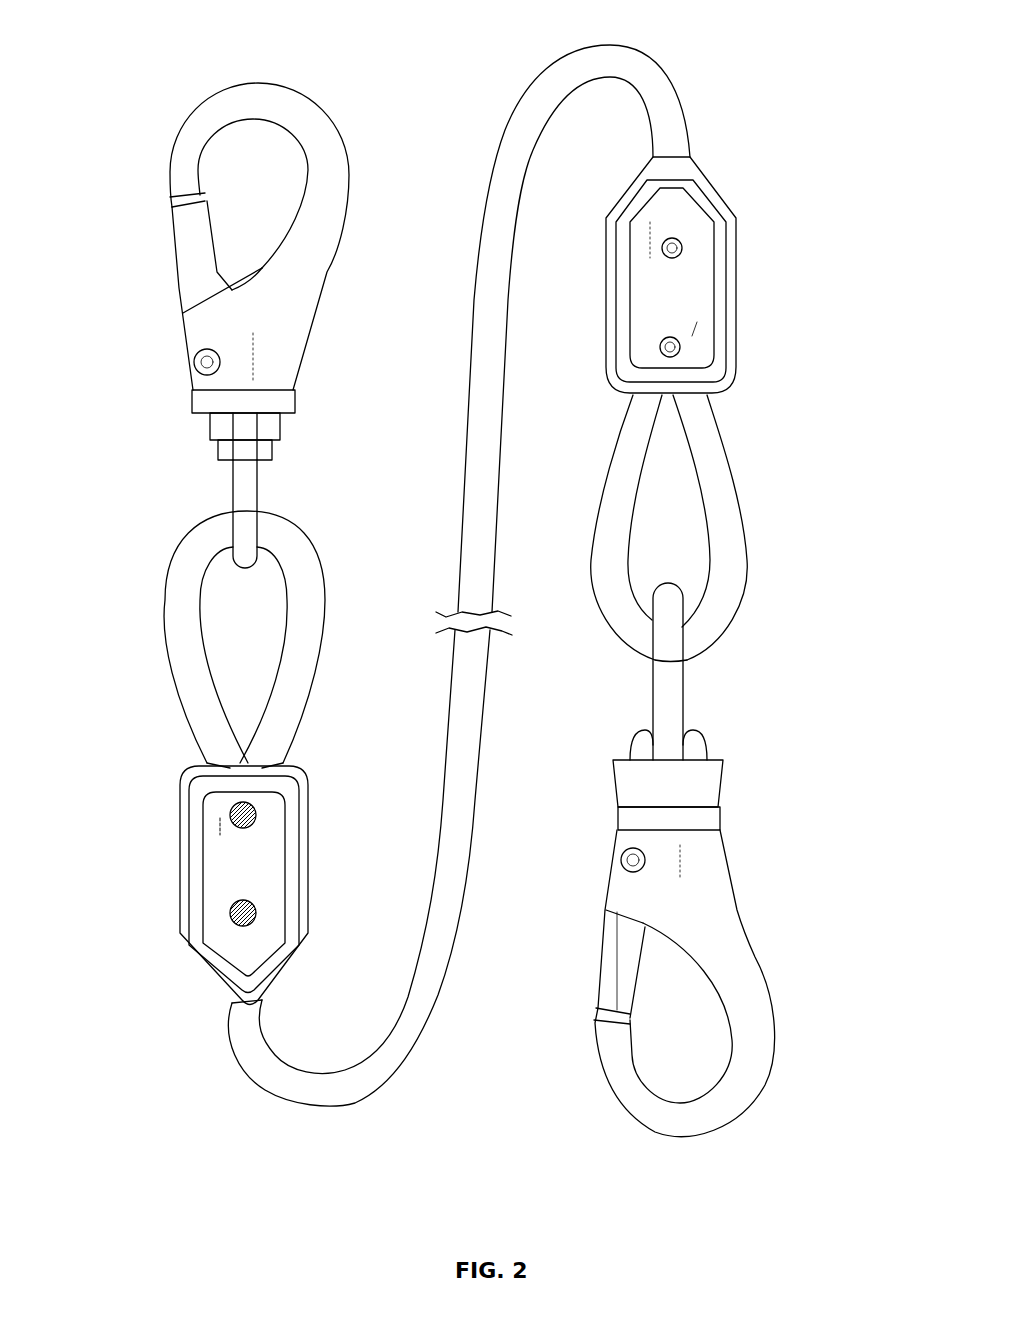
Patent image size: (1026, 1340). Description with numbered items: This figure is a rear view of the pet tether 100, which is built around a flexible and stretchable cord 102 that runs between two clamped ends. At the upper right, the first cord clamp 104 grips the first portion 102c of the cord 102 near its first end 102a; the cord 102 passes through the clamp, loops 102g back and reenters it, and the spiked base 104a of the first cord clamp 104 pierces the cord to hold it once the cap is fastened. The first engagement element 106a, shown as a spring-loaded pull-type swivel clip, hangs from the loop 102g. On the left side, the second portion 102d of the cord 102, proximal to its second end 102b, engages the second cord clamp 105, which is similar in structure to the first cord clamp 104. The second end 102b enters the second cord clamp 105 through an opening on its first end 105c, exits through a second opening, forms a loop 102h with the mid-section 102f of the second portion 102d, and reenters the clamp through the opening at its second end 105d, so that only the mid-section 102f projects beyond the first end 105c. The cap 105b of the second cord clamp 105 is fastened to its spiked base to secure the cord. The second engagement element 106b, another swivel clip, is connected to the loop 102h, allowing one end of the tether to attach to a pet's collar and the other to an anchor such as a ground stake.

The pet tether 100 is at (423, 76).
The flexible and stretchable cord 102 is at (476, 546).
The first end of the cord 102a is at (645, 398).
The second end of the cord 102b is at (214, 757).
The first portion of the cord 102c is at (756, 71).
The second portion of the cord 102d is at (132, 1084).
The mid-section of the second portion 102f is at (305, 520).
The loop at the first end 102g is at (702, 627).
The loop at the second end 102h is at (206, 524).
The first cord clamp 104 is at (738, 265).
The base of the first cord clamp 104a is at (701, 189).
The second cord clamp 105 is at (182, 940).
The cap of the second cord clamp 105b is at (224, 871).
The first end of the second cord clamp 105c is at (234, 1005).
The second end of the second cord clamp 105d is at (260, 771).
The first engagement element 106a is at (764, 1004).
The second engagement element 106b is at (204, 124).